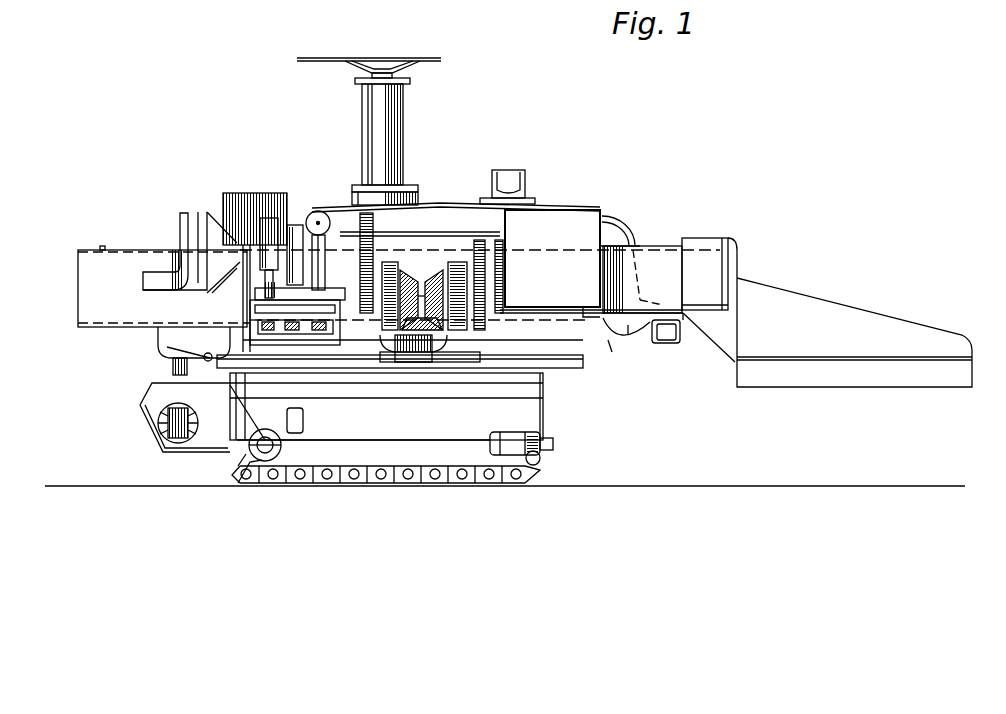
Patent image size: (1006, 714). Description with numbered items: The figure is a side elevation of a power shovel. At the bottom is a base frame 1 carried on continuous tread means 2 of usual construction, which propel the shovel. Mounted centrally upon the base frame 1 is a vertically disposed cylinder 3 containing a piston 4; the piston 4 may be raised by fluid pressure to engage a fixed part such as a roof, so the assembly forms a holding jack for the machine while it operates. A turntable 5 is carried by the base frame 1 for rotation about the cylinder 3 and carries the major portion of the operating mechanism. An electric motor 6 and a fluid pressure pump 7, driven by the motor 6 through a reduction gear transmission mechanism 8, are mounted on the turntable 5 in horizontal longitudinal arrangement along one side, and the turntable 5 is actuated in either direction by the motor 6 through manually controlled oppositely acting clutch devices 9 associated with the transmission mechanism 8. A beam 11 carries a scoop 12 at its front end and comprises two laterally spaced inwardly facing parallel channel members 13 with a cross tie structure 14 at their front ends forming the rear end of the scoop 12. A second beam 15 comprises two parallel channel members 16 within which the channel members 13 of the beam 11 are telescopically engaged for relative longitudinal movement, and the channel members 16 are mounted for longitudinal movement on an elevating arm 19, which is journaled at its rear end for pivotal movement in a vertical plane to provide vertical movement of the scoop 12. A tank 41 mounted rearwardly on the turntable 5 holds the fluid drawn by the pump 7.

The base frame 1 is at (545, 378).
The continuous tread means 2 is at (542, 456).
The vertically disposed cylinder 3 is at (420, 198).
The piston 4 is at (398, 126).
The turntable 5 is at (583, 361).
The electric motor 6 is at (606, 212).
The fluid pressure pump 7 is at (282, 212).
The reduction gear transmission mechanism 8 is at (380, 232).
The clutch devices 9 is at (440, 278).
The beam 11 is at (668, 245).
The scoop 12 is at (770, 288).
The channel members 13 is at (628, 335).
The cross tie structure 14 is at (698, 322).
The second beam 15 is at (648, 243).
The channel members 16 is at (612, 352).
The elevating arm 19 is at (488, 200).
The tank 41 is at (258, 196).